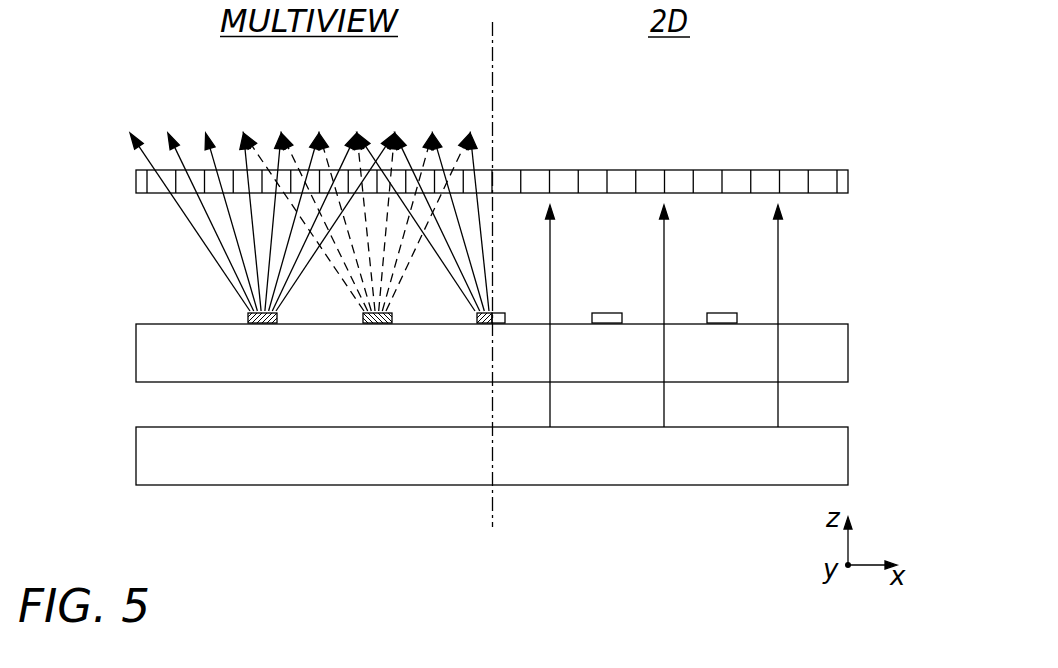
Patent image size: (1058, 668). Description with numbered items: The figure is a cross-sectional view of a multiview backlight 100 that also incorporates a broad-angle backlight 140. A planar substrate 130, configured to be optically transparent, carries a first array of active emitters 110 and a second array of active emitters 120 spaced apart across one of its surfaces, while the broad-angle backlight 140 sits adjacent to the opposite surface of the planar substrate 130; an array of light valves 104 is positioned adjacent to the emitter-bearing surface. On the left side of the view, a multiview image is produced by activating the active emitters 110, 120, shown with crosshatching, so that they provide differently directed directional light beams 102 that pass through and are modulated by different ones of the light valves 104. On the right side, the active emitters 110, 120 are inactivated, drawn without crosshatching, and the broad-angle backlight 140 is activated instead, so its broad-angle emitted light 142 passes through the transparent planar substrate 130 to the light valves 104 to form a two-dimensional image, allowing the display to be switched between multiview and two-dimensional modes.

The multiview backlight 100 is at (810, 55).
The directional light beams 102 is at (178, 238).
The light valves 104 is at (119, 176).
The active emitters 110 is at (236, 304).
The active emitters 120 is at (378, 346).
The planar substrate 130 is at (136, 353).
The broad-angle backlight 140 is at (136, 455).
The broad-angle emitted light 142 is at (836, 220).